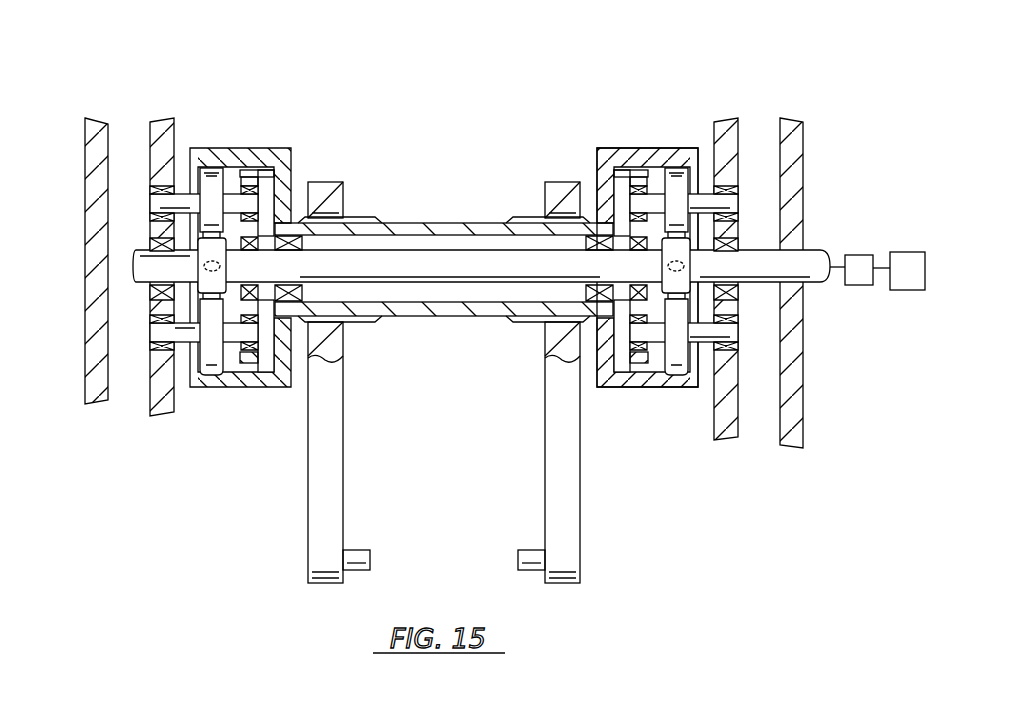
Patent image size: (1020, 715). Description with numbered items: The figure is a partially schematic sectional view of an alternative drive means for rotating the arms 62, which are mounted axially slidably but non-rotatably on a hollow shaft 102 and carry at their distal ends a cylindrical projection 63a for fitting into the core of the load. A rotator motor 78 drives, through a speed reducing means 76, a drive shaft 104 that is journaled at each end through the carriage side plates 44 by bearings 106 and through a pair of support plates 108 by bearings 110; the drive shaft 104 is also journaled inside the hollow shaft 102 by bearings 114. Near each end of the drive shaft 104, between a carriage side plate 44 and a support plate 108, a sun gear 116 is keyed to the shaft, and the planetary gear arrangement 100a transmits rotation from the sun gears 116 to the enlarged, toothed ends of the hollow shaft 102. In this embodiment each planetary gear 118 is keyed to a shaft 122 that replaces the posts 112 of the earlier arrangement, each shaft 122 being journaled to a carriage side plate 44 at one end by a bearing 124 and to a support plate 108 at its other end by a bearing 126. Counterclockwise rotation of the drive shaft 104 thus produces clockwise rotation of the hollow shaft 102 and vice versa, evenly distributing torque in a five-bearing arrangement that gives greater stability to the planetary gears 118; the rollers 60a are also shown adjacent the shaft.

The carriage side plates 44 is at (157, 133).
The rollers 60a is at (370, 218).
The arm 62 is at (335, 422).
The cylindrical projection 63a is at (370, 552).
The speed reducing means 76 is at (860, 255).
The rotator motor 78 is at (906, 252).
The planetary gear arrangement 100a is at (609, 143).
The hollow shaft 102 is at (435, 224).
The drive shaft 104 is at (813, 280).
The bearings 106 is at (152, 245).
The support plates 108 is at (248, 172).
The bearings 110 is at (262, 295).
The perpendicular posts 112 is at (735, 333).
The bearings 114 is at (300, 294).
The sun gear 116 is at (200, 263).
The planetary gears 118 is at (208, 167).
The shaft 122 is at (157, 203).
The bearing 124 is at (150, 188).
The bearing 126 is at (253, 190).